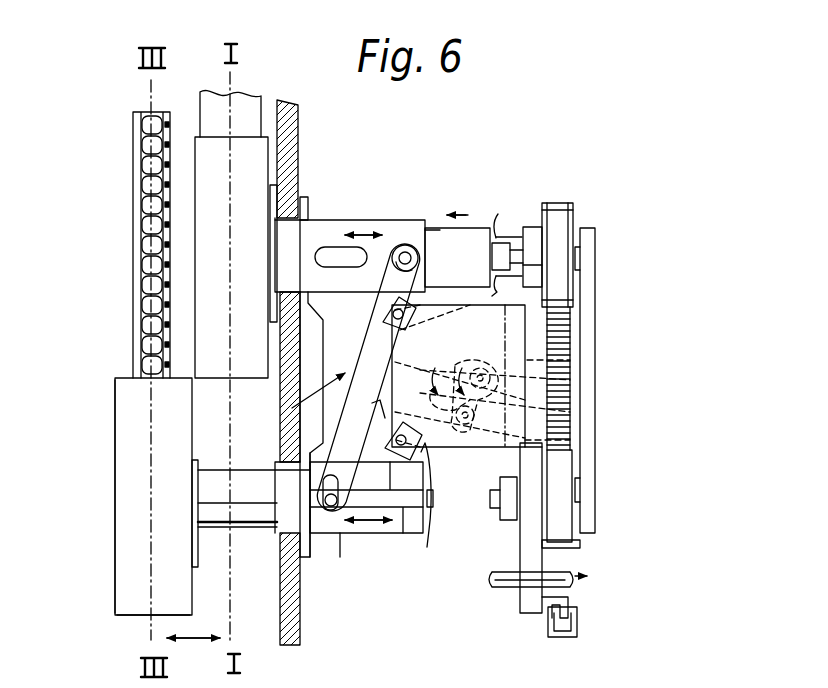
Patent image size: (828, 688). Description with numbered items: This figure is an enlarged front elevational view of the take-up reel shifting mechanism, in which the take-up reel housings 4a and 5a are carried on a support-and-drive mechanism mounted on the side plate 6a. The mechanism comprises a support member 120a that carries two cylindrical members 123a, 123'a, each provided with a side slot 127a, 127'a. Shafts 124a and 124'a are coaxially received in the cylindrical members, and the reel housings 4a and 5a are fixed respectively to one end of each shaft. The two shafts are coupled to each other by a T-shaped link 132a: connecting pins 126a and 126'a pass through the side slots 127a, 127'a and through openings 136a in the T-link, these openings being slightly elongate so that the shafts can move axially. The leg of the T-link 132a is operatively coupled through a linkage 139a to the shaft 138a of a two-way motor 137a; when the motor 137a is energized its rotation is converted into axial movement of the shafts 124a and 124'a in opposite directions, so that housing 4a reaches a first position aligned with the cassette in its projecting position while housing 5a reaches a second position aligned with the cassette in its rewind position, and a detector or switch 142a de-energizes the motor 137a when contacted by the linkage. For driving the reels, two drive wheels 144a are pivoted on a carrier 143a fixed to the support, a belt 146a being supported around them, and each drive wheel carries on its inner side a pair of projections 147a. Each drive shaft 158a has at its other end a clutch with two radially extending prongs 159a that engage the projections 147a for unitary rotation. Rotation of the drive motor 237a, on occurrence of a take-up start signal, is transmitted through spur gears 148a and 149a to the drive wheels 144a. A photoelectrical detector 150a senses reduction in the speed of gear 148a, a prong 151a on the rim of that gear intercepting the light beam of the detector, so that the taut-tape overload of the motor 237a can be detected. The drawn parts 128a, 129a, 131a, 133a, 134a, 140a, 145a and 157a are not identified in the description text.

The take-up reel housing 4a is at (195, 222).
The take-up reel housing 5a is at (113, 455).
The side plate 6a is at (286, 614).
The support member 120a is at (304, 221).
The cylindrical member 123a is at (368, 228).
The cylindrical member 123'a is at (366, 522).
The shaft 124a is at (444, 210).
The shaft 124'a is at (254, 521).
The connecting pin 126a is at (405, 246).
The connecting pin 126'a is at (339, 550).
The side slot 127a is at (333, 247).
The side slot 127'a is at (385, 593).
The body 128a is at (252, 167).
The carriage base 129a is at (134, 612).
The carriage housing 131a is at (115, 561).
The T-shaped link 132a is at (292, 408).
The guide flange 133a is at (320, 452).
The cam line 134a is at (570, 440).
The opening 136a is at (375, 331).
The two-way motor 137a is at (479, 447).
The motor shaft 138a is at (570, 357).
The linkage 139a is at (570, 380).
The cam follower 140a is at (570, 412).
The detector or switch 142a is at (454, 378).
The carrier 143a is at (595, 232).
The drive wheel 144a is at (573, 204).
The bearing 145a is at (615, 259).
The belt 146a is at (562, 322).
The projection 147a is at (543, 214).
The spur gear 148a is at (518, 591).
The spur gear 149a is at (528, 528).
The photoelectrical detector 150a is at (577, 637).
The prong 151a is at (578, 598).
The hub 157a is at (527, 270).
The drive shaft 158a is at (491, 268).
The clutch prong 159a is at (500, 215).
The drive motor 237a is at (652, 587).